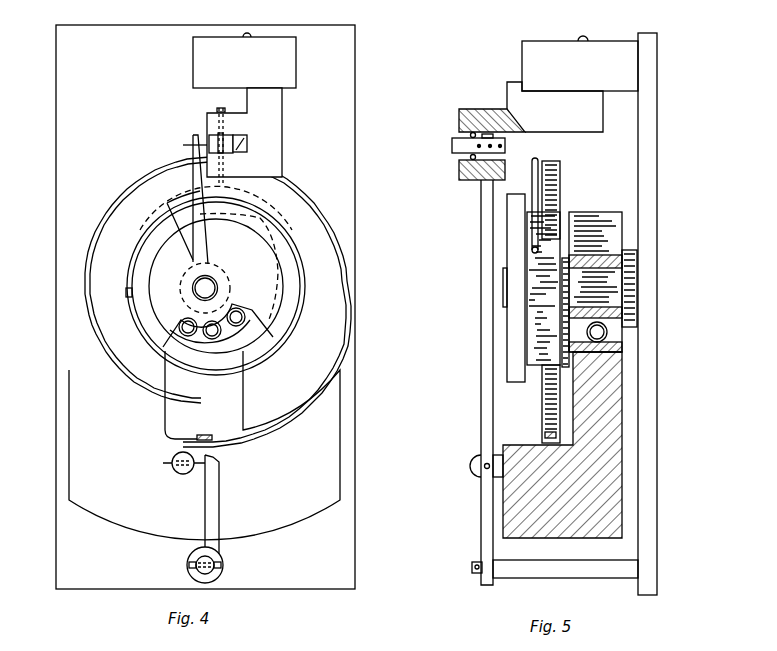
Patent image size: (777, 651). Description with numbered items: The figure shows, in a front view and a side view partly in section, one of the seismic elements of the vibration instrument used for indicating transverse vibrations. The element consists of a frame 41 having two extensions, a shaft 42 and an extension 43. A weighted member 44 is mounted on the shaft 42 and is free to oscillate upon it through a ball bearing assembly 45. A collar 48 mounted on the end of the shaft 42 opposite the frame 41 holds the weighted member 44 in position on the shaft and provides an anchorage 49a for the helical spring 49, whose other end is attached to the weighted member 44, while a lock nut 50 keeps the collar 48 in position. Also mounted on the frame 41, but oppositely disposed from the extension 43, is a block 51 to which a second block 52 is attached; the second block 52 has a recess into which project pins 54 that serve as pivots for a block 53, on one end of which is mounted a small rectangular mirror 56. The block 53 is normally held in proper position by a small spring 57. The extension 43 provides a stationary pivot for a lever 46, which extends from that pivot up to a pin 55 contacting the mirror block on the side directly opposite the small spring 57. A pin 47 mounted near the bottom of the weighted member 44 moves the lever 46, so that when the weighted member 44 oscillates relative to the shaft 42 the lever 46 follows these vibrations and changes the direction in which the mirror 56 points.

In FIG. 4, the frame 41 is at (347, 545).
In FIG. 5, the frame 41 is at (650, 494).
In FIG. 4, the shaft 42 is at (197, 291).
In FIG. 5, the shaft 42 is at (503, 290).
In FIG. 4, the extension 43 is at (216, 563).
In FIG. 5, the extension 43 is at (582, 573).
In FIG. 4, the weighted member 44 is at (285, 513).
In FIG. 5, the weighted member 44 is at (560, 523).
In FIG. 4, the ball bearing assembly 45 is at (238, 312).
In FIG. 5, the ball bearing assembly 45 is at (606, 334).
In FIG. 4, the lever 46 is at (193, 186).
In FIG. 5, the lever 46 is at (480, 410).
In FIG. 4, the pin 47 is at (186, 474).
In FIG. 4, the collar 48 is at (147, 322).
In FIG. 5, the collar 48 is at (535, 365).
In FIG. 4, the helical spring 49 is at (345, 341).
In FIG. 5, the helical spring 49 is at (560, 177).
In FIG. 4, the anchorage 49a is at (127, 297).
In FIG. 4, the lock nut 50 is at (283, 247).
In FIG. 5, the lock nut 50 is at (510, 330).
In FIG. 4, the block 51 is at (296, 50).
In FIG. 5, the block 51 is at (545, 51).
In FIG. 4, the second block 52 is at (282, 108).
In FIG. 5, the second block 52 is at (507, 88).
In FIG. 4, the block 53 is at (210, 137).
In FIG. 4, the pins 54 is at (218, 109).
In FIG. 5, the pins 54 is at (459, 118).
In FIG. 4, the pin 55 is at (190, 148).
In FIG. 5, the small rectangular mirror 56 is at (452, 148).
In FIG. 4, the small spring 57 is at (247, 142).